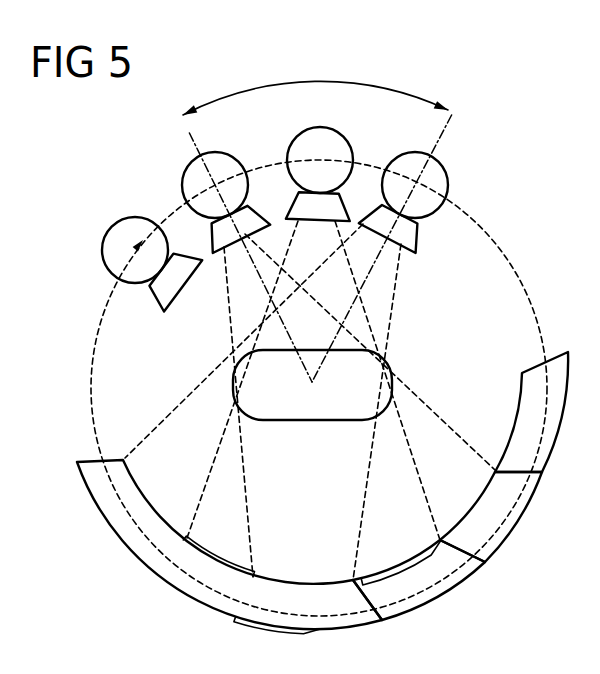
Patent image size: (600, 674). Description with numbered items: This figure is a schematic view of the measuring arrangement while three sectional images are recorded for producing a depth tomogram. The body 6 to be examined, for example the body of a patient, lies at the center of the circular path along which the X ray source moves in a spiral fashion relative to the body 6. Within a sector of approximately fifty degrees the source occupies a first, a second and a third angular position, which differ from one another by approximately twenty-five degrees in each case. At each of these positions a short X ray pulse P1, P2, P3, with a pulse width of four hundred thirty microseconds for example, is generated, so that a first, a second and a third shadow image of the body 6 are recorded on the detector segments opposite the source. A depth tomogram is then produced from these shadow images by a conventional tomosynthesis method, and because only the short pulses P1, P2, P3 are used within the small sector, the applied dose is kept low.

The body to be examined 6 is at (322, 420).
The first X ray pulse P1 is at (395, 308).
The second X ray pulse P2 is at (207, 480).
The third X ray pulse P3 is at (232, 313).